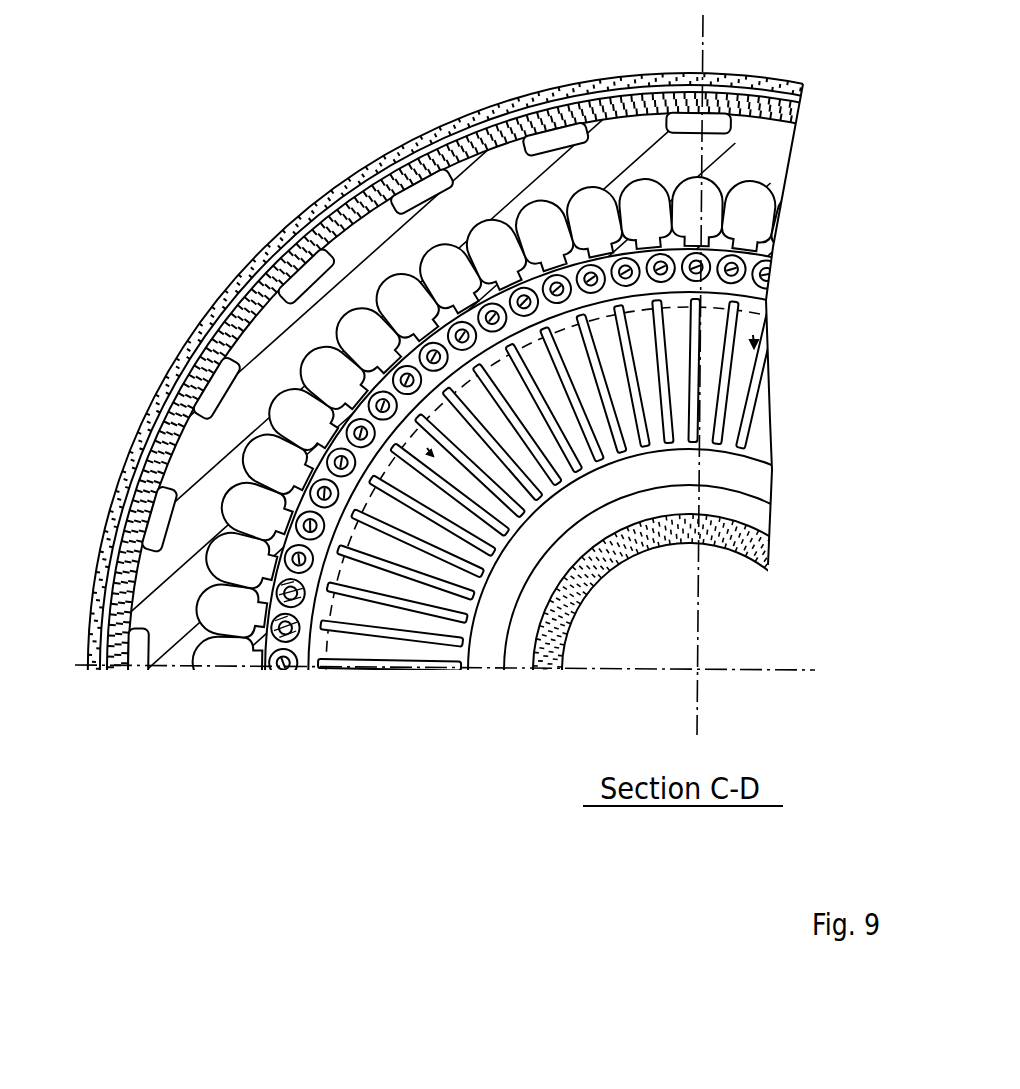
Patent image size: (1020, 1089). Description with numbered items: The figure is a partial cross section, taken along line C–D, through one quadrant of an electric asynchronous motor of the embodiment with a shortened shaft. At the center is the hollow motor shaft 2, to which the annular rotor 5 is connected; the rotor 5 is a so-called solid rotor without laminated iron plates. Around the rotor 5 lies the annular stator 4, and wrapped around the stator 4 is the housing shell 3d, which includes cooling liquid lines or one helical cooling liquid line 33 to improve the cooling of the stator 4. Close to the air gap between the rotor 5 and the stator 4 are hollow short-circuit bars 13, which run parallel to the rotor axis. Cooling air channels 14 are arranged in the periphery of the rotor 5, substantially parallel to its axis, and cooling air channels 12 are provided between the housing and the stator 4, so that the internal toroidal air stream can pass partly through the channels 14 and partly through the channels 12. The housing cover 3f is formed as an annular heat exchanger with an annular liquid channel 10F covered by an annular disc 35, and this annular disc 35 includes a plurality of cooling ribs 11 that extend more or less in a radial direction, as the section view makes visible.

The hollow motor shaft 2 is at (688, 669).
The housing shell 3d is at (563, 590).
The housing cover 3f is at (702, 664).
The stator 4 is at (510, 544).
The rotor 5 is at (659, 670).
The annular liquid channel 10F is at (676, 391).
The cooling ribs 11 is at (666, 666).
The cooling air channels 12 is at (548, 575).
The hollow short-circuit bars 13 is at (509, 505).
The cooling air channels 14 is at (177, 579).
The cooling liquid line 33 is at (560, 566).
The annular disc 35 is at (689, 670).